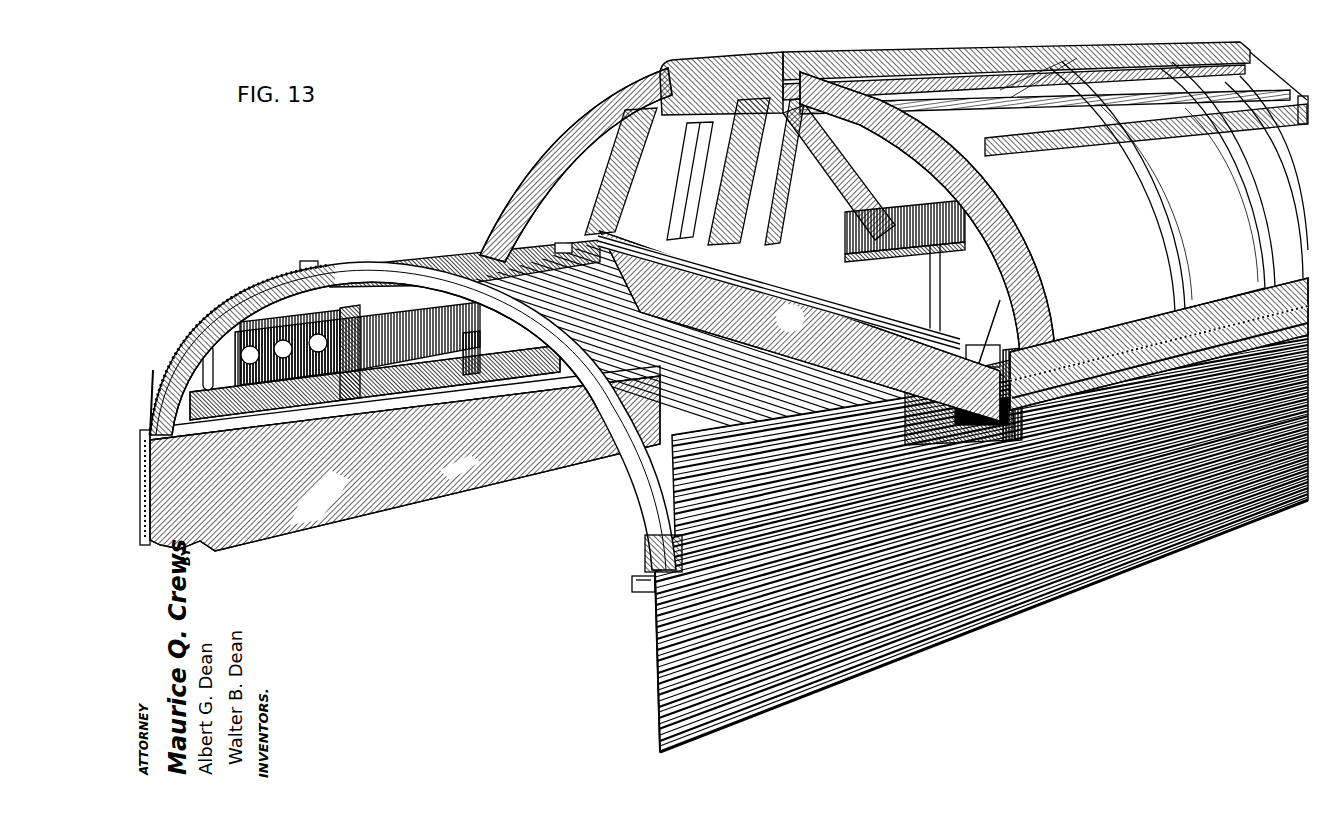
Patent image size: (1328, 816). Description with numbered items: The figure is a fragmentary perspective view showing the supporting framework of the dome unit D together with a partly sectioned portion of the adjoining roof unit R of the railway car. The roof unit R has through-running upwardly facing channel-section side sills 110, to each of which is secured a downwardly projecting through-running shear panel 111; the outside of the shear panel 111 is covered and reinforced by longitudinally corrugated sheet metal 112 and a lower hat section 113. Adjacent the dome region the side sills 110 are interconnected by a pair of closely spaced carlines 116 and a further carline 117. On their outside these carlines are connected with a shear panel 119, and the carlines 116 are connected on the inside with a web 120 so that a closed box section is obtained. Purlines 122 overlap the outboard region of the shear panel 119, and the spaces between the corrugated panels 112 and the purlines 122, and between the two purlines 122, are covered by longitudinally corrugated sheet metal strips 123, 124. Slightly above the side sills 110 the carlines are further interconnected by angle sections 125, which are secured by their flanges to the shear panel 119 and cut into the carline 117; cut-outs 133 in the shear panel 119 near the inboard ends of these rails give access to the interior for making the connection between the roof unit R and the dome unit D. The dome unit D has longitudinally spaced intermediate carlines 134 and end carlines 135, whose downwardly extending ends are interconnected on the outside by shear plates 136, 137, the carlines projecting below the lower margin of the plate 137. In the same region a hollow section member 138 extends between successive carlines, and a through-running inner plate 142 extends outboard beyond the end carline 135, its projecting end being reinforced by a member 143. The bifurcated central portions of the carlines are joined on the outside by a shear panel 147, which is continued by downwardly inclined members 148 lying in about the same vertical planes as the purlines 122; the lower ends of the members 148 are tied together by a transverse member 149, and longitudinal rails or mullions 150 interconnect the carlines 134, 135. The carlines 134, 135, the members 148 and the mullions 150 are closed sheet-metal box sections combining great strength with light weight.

The side sill 110 is at (233, 432).
The shear panel 111 is at (242, 534).
The longitudinally corrugated sheet metal 112 is at (656, 694).
The lower hat section 113 is at (668, 745).
The carlines 116 is at (411, 411).
The carline 117 is at (374, 303).
The shear panel 119 is at (800, 326).
The web 120 is at (186, 406).
The purlines 122 is at (309, 262).
The longitudinally corrugated sheet metal strip 123 is at (243, 290).
The longitudinally corrugated sheet metal strip 124 is at (495, 243).
The angle sections 125 is at (200, 364).
The cut-outs 133 is at (947, 393).
The intermediate carlines 134 is at (1257, 198).
The end carlines 135 is at (1013, 224).
The shear panel 136 is at (1219, 292).
The shear plate 137 is at (1296, 320).
The hollow section member 138 is at (848, 224).
The inner plate 142 is at (880, 214).
The reinforcing member 143 is at (950, 352).
The shear panel 147 is at (721, 62).
The downwardly inclined members 148 is at (626, 194).
The transverse member 149 is at (624, 240).
The longitudinal rails or mullions 150 is at (1075, 143).
The dome unit D is at (562, 125).
The roof unit R is at (433, 247).